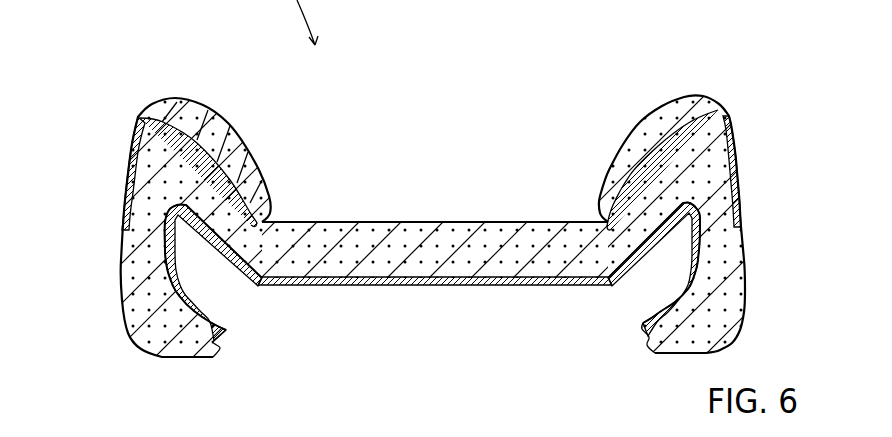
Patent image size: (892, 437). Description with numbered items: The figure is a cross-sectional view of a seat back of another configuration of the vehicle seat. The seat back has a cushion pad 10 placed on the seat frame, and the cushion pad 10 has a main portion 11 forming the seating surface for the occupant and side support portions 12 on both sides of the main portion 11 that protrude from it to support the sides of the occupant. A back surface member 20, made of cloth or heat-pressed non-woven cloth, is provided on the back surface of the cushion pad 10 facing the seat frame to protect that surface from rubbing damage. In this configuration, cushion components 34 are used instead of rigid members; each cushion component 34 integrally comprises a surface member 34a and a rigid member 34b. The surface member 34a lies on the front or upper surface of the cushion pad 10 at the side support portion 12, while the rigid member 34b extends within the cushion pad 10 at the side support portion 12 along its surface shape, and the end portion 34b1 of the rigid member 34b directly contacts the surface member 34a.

The cushion pad 10 is at (467, 257).
The back surface member 20 is at (360, 287).
The main portion 11 is at (568, 205).
The side support portion 12 is at (300, 204).
The cushion component 34 is at (122, 137).
The surface member 34a is at (128, 188).
The rigid member 34b is at (209, 172).
The end portion 34b1 is at (140, 120).